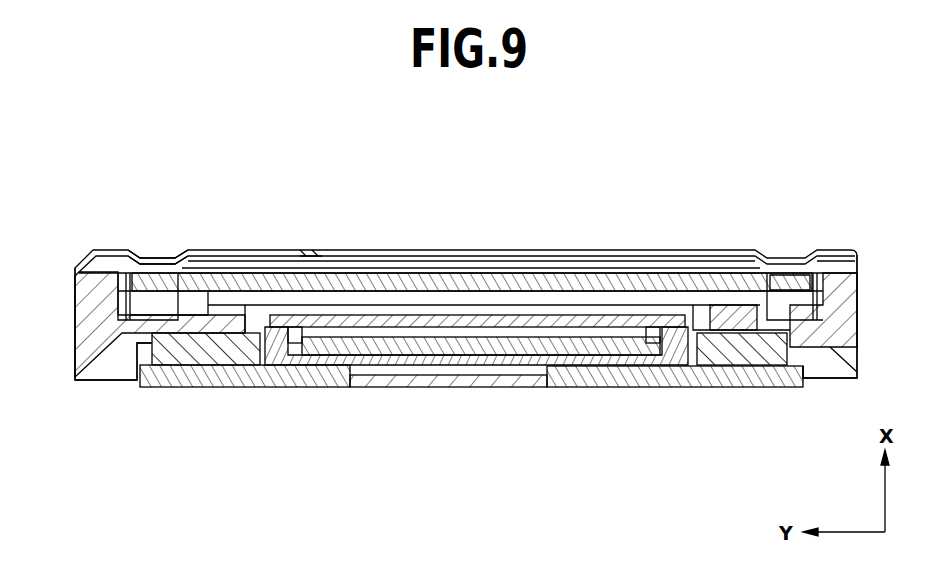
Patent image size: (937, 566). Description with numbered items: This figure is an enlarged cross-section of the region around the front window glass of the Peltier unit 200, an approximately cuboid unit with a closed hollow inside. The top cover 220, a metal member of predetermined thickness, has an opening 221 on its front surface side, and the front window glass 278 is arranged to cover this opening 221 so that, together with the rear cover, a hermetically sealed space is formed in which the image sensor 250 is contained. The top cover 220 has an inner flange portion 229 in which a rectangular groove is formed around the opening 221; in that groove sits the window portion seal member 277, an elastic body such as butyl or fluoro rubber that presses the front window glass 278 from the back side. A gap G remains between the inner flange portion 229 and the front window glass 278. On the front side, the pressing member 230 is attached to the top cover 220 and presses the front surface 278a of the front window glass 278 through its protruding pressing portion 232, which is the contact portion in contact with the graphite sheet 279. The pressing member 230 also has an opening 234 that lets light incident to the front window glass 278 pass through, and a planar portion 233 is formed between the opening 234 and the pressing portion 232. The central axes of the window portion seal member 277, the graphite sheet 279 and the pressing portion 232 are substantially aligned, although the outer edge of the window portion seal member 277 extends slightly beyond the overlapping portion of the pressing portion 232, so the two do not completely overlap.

The Peltier unit 200 is at (722, 170).
The top cover 220 is at (840, 313).
The opening 221 is at (714, 305).
The inner flange portion 229 is at (224, 322).
The pressing member 230 is at (101, 248).
The pressing portion 232 is at (162, 264).
The planar portion 233 is at (228, 256).
The opening 234 is at (450, 250).
The image sensor 250 is at (418, 350).
The window portion seal member 277 is at (118, 303).
The front window glass 278 is at (548, 273).
The front surface 278a is at (670, 291).
The graphite sheet 279 is at (270, 268).
The gap G is at (195, 300).